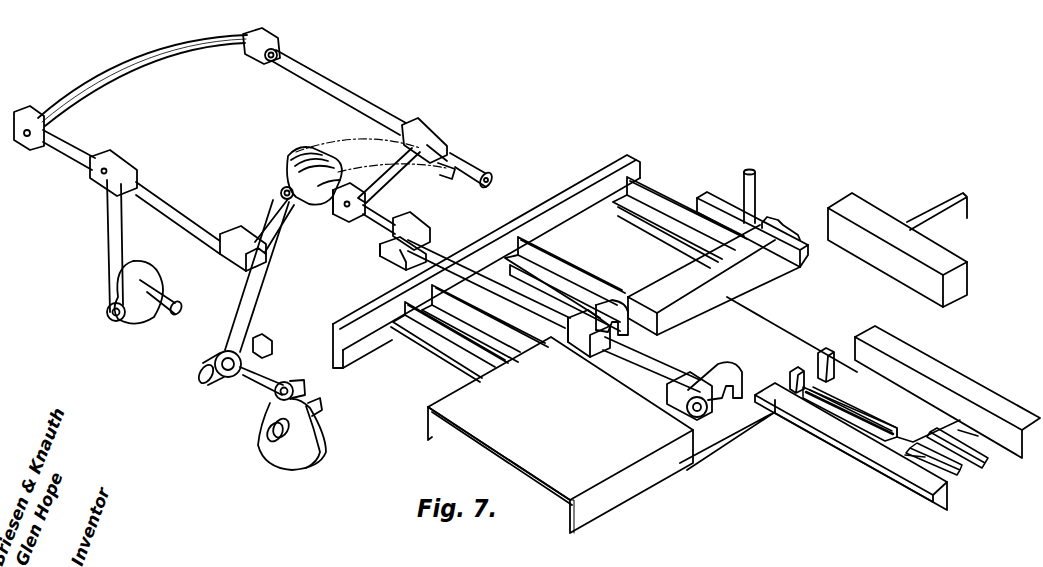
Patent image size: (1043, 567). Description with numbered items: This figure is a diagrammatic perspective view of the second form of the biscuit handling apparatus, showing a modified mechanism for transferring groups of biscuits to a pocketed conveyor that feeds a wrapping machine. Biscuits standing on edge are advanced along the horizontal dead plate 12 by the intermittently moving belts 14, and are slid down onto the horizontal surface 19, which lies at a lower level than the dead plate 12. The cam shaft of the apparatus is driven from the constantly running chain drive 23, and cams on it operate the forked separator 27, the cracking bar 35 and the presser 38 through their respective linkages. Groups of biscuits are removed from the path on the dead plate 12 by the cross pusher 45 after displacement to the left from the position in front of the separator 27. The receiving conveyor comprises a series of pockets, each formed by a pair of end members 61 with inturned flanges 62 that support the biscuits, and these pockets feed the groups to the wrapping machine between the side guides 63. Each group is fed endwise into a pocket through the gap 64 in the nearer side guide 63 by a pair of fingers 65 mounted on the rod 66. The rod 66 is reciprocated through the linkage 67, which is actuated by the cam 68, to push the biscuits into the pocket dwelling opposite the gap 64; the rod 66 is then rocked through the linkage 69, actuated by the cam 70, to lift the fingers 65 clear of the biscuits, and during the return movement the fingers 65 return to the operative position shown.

The dead plate 12 is at (911, 418).
The belts 14 is at (982, 466).
The horizontal surface 19 is at (771, 321).
The chain drive 23 is at (918, 353).
The forked separator 27 is at (817, 351).
The cracking bar 35 is at (842, 400).
The presser 38 is at (707, 192).
The cross pusher 45 is at (870, 253).
The end members 61 is at (533, 224).
The inturned flanges 62 is at (428, 340).
The side guides 63 is at (376, 340).
The gap 64 is at (632, 322).
The fingers 65 is at (608, 300).
The rod 66 is at (458, 262).
The linkage 67 is at (250, 303).
The cam 68 is at (305, 447).
The linkage 69 is at (120, 230).
The cam 70 is at (153, 276).